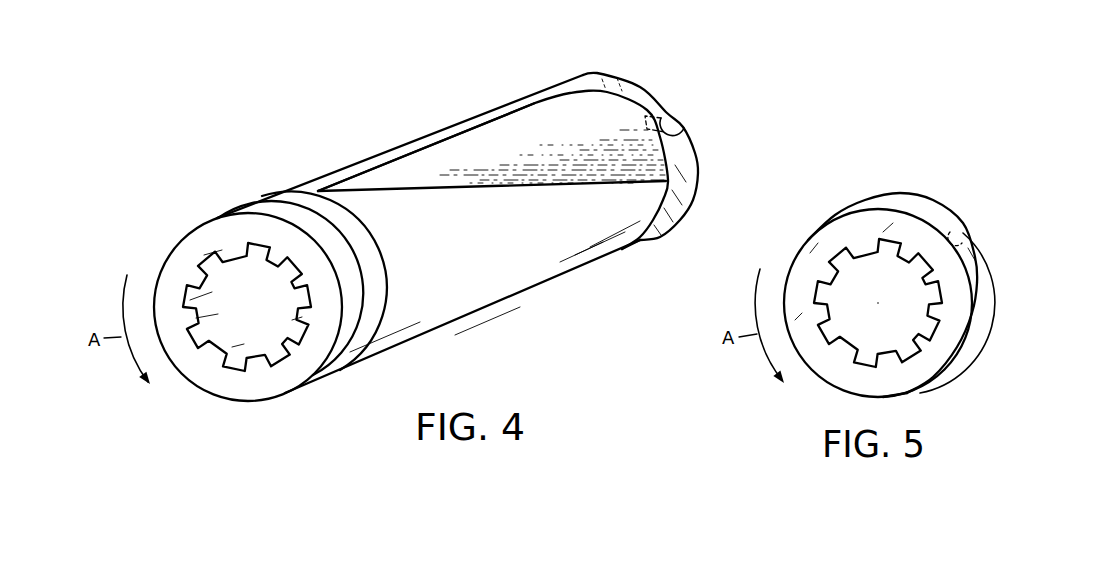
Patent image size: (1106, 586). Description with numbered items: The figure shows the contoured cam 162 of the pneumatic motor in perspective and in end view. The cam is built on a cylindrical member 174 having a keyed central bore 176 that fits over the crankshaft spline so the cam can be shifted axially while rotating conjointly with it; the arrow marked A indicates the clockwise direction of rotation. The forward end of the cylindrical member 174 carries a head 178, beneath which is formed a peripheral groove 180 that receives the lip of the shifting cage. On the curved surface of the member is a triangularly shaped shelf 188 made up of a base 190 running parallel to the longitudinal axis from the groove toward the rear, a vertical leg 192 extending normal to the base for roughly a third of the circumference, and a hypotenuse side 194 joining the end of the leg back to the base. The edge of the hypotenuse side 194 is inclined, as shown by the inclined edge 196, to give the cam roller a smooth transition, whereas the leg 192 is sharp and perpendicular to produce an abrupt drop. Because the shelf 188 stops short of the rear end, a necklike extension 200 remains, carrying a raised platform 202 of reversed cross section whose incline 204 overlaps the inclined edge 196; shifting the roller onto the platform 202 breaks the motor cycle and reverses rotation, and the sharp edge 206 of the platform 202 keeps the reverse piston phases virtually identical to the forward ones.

In FIG. 4, the contoured cam 162 is at (458, 334).
In FIG. 4, the cylindrical member 174 is at (527, 277).
In FIG. 4, the keyed central bore 176 is at (210, 258).
In FIG. 5, the keyed central bore 176 is at (822, 285).
In FIG. 4, the head 178 is at (226, 385).
In FIG. 5, the head 178 is at (800, 278).
In FIG. 4, the peripheral groove 180 is at (285, 202).
In FIG. 4, the triangularly shaped shelf 188 is at (562, 163).
In FIG. 5, the triangularly shaped shelf 188 is at (930, 202).
In FIG. 4, the base 190 is at (461, 133).
In FIG. 5, the base 190 is at (808, 233).
In FIG. 4, the vertical leg 192 is at (613, 90).
In FIG. 4, the hypotenuse side 194 is at (488, 190).
In FIG. 5, the hypotenuse side 194 is at (973, 287).
In FIG. 4, the inclined edge 196 is at (508, 207).
In FIG. 5, the inclined edge 196 is at (975, 258).
In FIG. 4, the necklike extension 200 is at (632, 92).
In FIG. 4, the raised platform 202 is at (690, 175).
In FIG. 5, the raised platform 202 is at (997, 320).
In FIG. 4, the incline 204 is at (683, 121).
In FIG. 5, the incline 204 is at (971, 228).
In FIG. 4, the sharp edge 206 is at (643, 238).
In FIG. 5, the sharp edge 206 is at (913, 393).